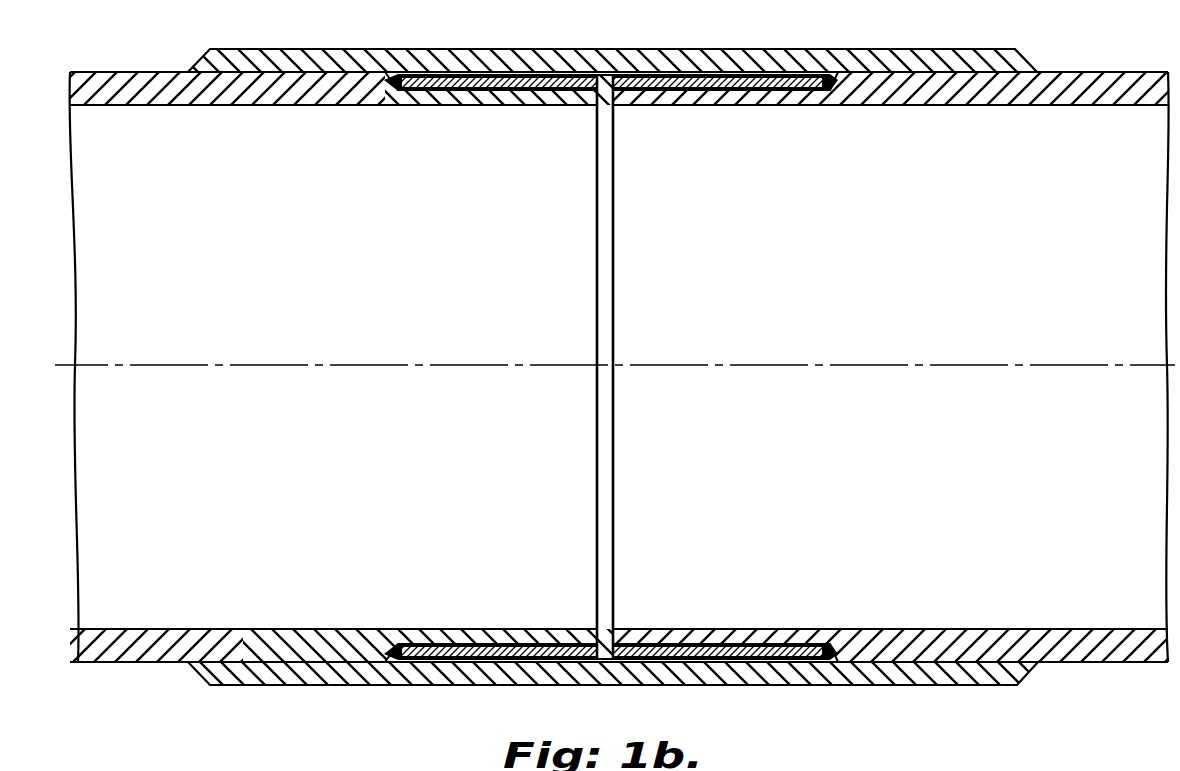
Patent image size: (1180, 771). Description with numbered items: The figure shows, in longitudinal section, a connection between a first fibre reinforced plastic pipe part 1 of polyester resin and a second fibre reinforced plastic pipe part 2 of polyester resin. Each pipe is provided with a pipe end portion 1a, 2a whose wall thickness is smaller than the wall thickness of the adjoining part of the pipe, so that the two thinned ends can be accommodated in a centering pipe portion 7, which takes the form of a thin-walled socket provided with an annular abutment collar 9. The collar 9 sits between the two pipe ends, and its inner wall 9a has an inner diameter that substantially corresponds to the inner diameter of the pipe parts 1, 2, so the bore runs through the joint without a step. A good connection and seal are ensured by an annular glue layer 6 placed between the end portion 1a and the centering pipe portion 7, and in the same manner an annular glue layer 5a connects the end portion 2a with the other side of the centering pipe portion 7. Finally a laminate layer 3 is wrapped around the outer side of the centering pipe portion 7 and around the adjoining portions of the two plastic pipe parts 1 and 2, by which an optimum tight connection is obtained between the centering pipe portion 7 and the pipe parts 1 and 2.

The first fibre reinforced plastic pipe part 1 is at (333, 386).
The pipe end portion of first pipe part 1a is at (525, 632).
The second fibre reinforced plastic pipe part 2 is at (891, 382).
The pipe end portion of second pipe part 2a is at (680, 632).
The laminate layer 3 is at (425, 673).
The adhesive layer 5a is at (717, 636).
The annular glue layer 6 is at (477, 642).
The centering pipe portion 7 is at (600, 658).
The collar 9 is at (607, 630).
The inner wall of the collar 9a is at (603, 110).